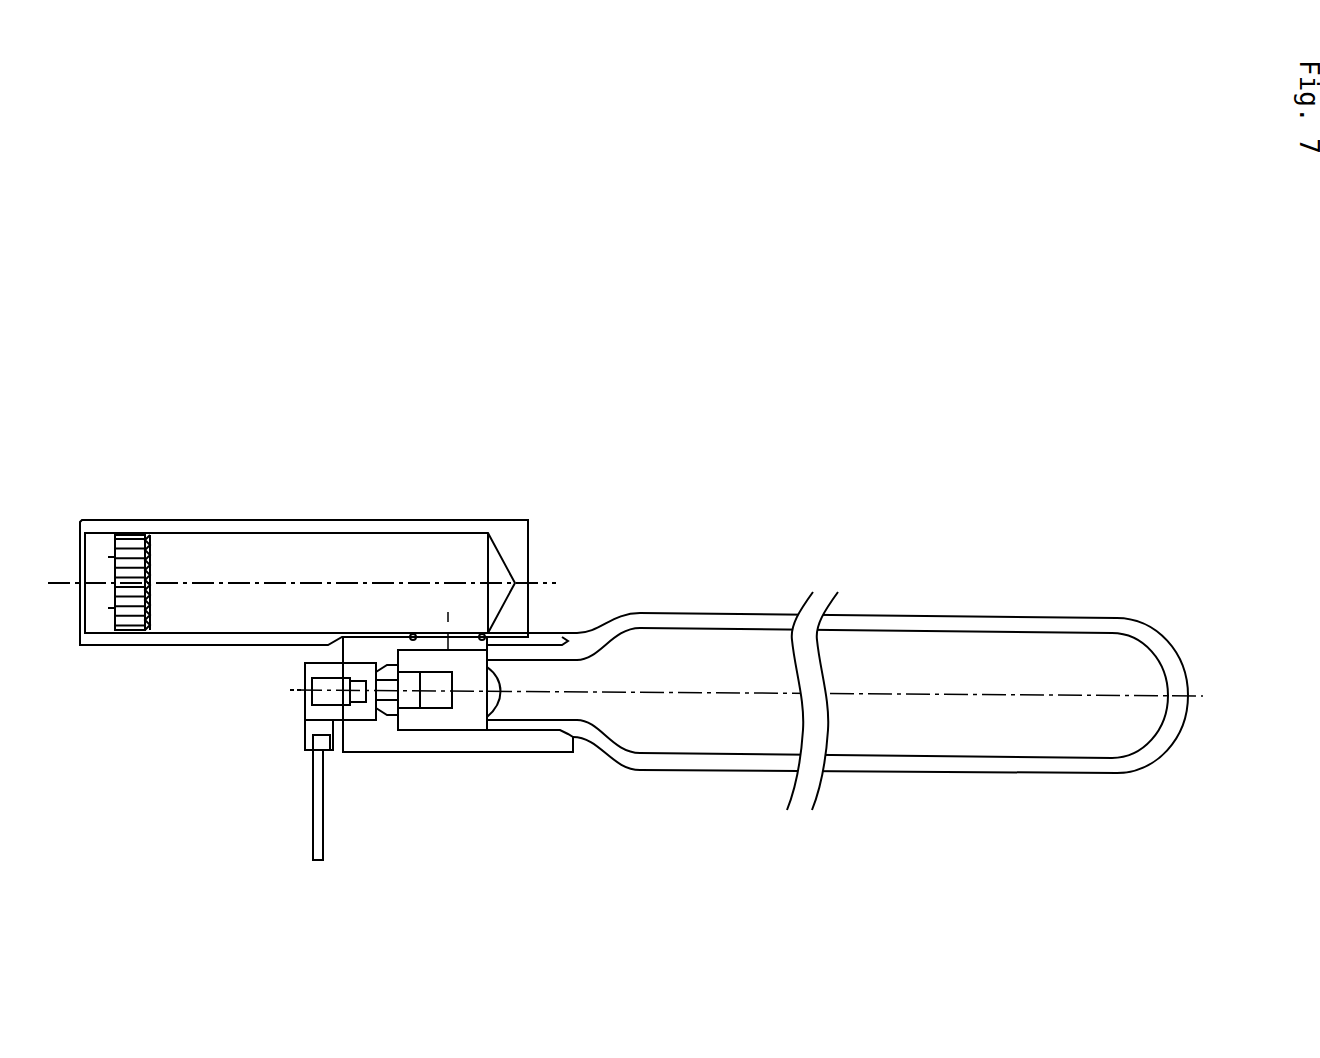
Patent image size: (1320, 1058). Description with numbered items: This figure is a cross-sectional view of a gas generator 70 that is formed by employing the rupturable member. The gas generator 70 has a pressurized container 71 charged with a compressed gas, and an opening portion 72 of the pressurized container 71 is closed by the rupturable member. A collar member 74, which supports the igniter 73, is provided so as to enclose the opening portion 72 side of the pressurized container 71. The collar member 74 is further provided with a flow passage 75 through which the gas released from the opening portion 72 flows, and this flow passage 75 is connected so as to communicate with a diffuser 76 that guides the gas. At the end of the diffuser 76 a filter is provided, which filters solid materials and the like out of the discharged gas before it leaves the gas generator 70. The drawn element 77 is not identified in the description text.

The gas generator 70 is at (908, 457).
The pressurized container 71 is at (947, 617).
The opening portion 72 is at (487, 713).
The igniter 73 is at (420, 713).
The collar member 74 is at (358, 740).
The flow passage 75 is at (461, 637).
The diffuser 76 is at (280, 508).
The heating element 77 is at (150, 553).